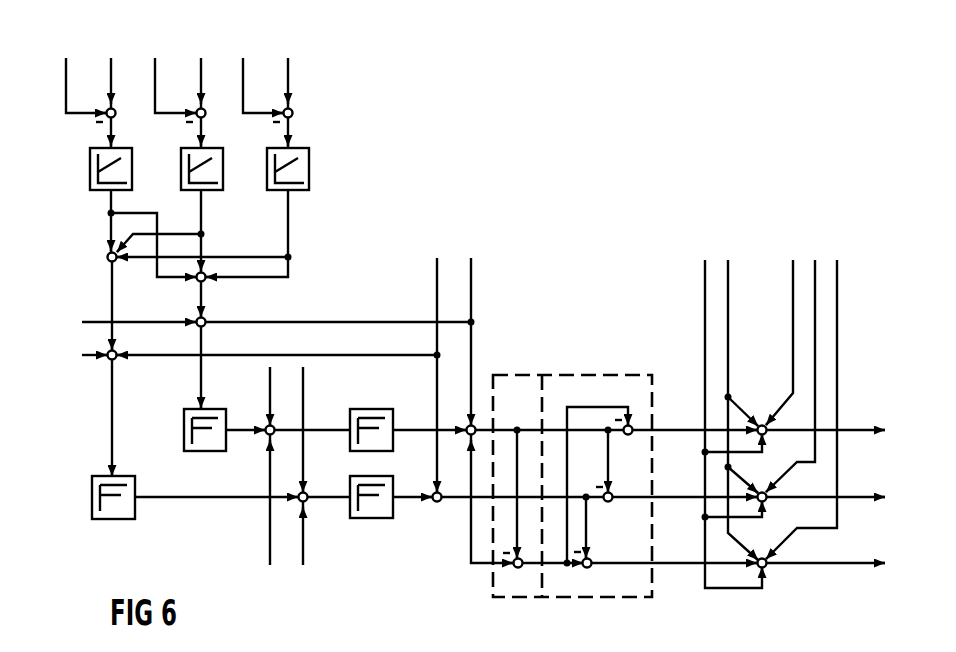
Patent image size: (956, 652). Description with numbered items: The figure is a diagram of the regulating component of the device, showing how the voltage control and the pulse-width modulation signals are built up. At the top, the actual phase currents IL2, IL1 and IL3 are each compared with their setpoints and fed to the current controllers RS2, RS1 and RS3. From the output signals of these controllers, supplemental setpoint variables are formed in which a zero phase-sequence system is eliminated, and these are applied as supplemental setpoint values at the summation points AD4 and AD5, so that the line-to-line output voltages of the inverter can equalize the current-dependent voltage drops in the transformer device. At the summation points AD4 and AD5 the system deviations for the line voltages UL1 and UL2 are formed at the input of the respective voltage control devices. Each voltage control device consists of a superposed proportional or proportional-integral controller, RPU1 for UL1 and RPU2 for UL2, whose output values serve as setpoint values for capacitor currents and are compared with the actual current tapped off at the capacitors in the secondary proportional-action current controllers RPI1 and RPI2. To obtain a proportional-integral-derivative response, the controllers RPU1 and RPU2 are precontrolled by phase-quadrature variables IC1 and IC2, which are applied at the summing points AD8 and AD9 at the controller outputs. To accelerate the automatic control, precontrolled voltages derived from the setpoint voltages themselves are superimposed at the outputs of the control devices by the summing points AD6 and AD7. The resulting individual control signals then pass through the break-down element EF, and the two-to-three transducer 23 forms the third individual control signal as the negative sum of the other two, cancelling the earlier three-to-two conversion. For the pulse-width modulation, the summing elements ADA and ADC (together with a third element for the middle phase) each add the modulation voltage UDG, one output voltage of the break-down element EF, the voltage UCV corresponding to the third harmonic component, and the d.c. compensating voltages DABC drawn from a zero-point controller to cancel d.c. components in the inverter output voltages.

The actual current phase L2 IL2 is at (77, 72).
The actual current phase L1 IL1 is at (168, 72).
The actual current phase L3 IL3 is at (254, 72).
The current controller RS1 is at (206, 192).
The current controller RS2 is at (99, 191).
The current controller RS3 is at (295, 192).
The summation point AD4 is at (205, 318).
The summation point AD5 is at (117, 351).
The line voltage L1 UL1 is at (263, 322).
The line voltage L2 UL2 is at (246, 355).
The summing point AD6 is at (474, 425).
The summing point AD7 is at (434, 493).
The summing point AD8 is at (265, 426).
The summing point AD9 is at (307, 502).
The superposed proportional controller RPU1 is at (189, 452).
The superposed proportional controller RPU2 is at (152, 537).
The secondary current controller RPI1 is at (397, 409).
The secondary current controller RPI2 is at (368, 518).
The precontrolled variable IC1 is at (263, 482).
The precontrolled variable IC2 is at (314, 482).
The modulation voltage UDG is at (705, 300).
The third-harmonic voltage UCV is at (728, 300).
The d.c. compensating voltages DABC is at (843, 258).
The summing element ADA is at (761, 424).
The summing element ADC is at (765, 567).
The 2/3 transducer 23 is at (518, 598).
The break-down element EF is at (592, 598).